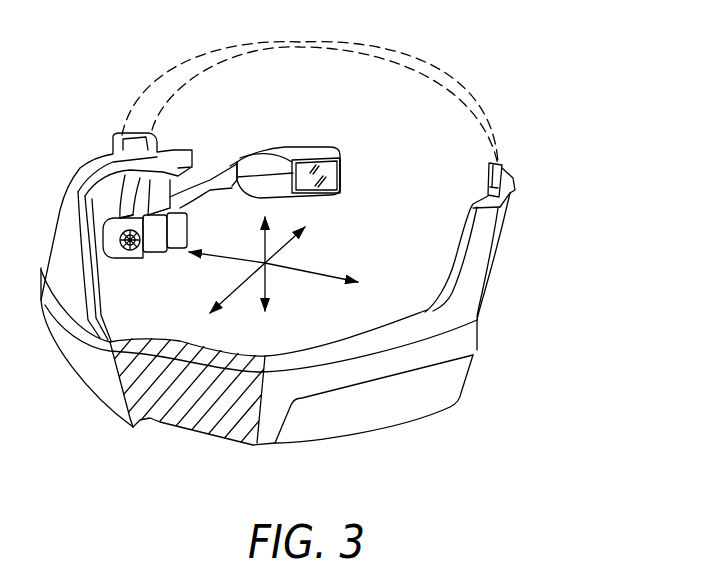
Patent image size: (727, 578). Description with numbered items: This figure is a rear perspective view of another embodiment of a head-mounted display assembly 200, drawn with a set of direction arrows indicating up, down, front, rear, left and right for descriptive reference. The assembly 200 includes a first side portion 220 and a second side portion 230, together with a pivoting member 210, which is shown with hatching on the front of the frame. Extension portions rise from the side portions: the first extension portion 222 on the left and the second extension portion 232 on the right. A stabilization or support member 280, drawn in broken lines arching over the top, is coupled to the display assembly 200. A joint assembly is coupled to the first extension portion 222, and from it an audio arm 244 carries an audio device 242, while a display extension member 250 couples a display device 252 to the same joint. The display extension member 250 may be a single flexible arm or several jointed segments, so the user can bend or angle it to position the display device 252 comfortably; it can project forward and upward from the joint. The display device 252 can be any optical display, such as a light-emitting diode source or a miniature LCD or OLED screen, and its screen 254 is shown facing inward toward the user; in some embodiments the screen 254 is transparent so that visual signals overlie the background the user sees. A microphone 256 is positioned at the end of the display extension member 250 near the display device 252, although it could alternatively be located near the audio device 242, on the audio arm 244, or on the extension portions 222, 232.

The head-mounted display assembly 200 is at (574, 102).
The pivoting member 210 is at (187, 422).
The first side portion 220 is at (62, 361).
The first extension portion 222 is at (96, 162).
The second side portion 230 is at (365, 424).
The second extension portion 232 is at (500, 227).
The audio device 242 is at (132, 256).
The audio arm 244 is at (145, 199).
The display extension member 250 is at (213, 172).
The display device 252 is at (297, 147).
The screen 254 is at (320, 178).
The microphone 256 is at (338, 194).
The support member 280 is at (440, 64).